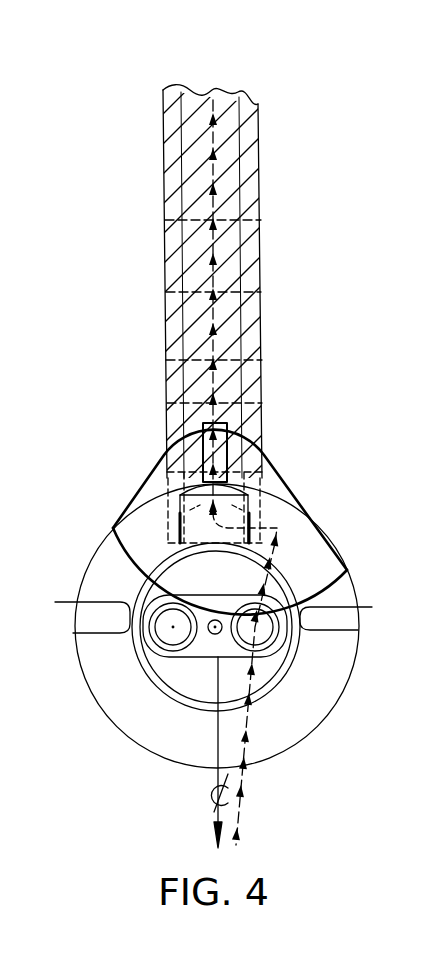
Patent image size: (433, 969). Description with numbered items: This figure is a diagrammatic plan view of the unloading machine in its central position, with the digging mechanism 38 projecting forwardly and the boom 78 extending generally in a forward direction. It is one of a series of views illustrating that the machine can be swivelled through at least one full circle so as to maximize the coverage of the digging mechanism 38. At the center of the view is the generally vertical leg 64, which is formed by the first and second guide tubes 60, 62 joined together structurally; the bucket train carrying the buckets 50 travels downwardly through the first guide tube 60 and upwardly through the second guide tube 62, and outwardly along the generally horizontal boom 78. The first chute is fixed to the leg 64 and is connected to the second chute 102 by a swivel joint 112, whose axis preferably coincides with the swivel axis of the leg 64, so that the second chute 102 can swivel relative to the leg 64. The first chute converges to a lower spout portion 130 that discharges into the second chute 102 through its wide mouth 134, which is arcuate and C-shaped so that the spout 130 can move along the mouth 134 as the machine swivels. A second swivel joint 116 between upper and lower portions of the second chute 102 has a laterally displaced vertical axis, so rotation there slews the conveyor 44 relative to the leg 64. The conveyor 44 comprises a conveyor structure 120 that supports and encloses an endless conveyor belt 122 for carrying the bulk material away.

The conveyor 44 is at (268, 144).
The endless conveyor belt 122 is at (230, 198).
The conveyor structure 120 is at (263, 234).
The second swivel joint 116 is at (263, 451).
The lower spout portion 130 is at (250, 508).
The second chute 102 is at (143, 490).
The wide mouth 134 is at (330, 544).
The swivel joint 112 is at (293, 683).
The vertical leg 64 is at (186, 662).
The first guide tube 60 is at (157, 652).
The second guide tube 62 is at (280, 645).
The buckets 50 is at (210, 614).
The boom 78 is at (210, 740).
The digging mechanism 38 is at (252, 822).